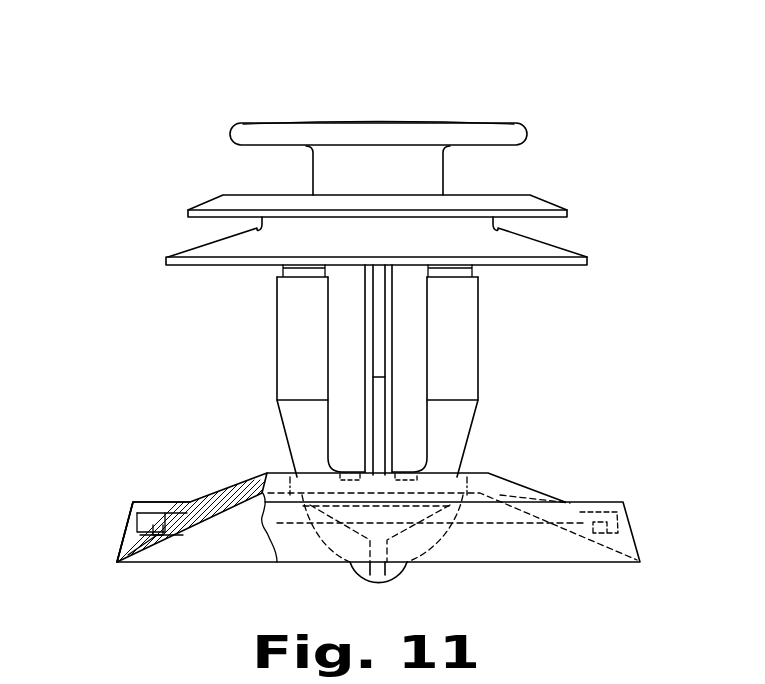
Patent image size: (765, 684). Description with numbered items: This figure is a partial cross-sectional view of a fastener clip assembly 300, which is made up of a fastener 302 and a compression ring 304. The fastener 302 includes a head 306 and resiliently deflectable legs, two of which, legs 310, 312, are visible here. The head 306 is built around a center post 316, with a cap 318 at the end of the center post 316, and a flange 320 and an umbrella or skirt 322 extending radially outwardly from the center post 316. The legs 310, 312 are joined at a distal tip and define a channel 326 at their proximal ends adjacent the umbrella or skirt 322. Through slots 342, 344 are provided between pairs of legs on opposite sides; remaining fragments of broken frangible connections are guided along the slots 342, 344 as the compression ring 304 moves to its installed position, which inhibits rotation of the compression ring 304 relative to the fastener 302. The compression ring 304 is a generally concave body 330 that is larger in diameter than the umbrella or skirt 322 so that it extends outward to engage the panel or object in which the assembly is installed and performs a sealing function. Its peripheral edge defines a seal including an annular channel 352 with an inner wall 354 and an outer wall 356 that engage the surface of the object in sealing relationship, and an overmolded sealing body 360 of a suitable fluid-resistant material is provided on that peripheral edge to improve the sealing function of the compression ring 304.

The fastener clip assembly 300 is at (155, 132).
The fastener 302 is at (380, 98).
The compression ring 304 is at (647, 486).
The head 306 is at (553, 169).
The resiliently deflectable leg 310 is at (285, 372).
The resiliently deflectable leg 312 is at (472, 373).
The center post 316 is at (317, 170).
The cap 318 is at (262, 132).
The flange 320 is at (197, 208).
The umbrella or skirt 322 is at (190, 253).
The channel 326 is at (283, 269).
The concave body 330 is at (240, 487).
The through slot 342 is at (347, 363).
The through slot 344 is at (412, 358).
The annular channel 352 is at (157, 536).
The inner wall 354 is at (172, 537).
The outer wall 356 is at (125, 535).
The overmolded sealing body 360 is at (113, 550).